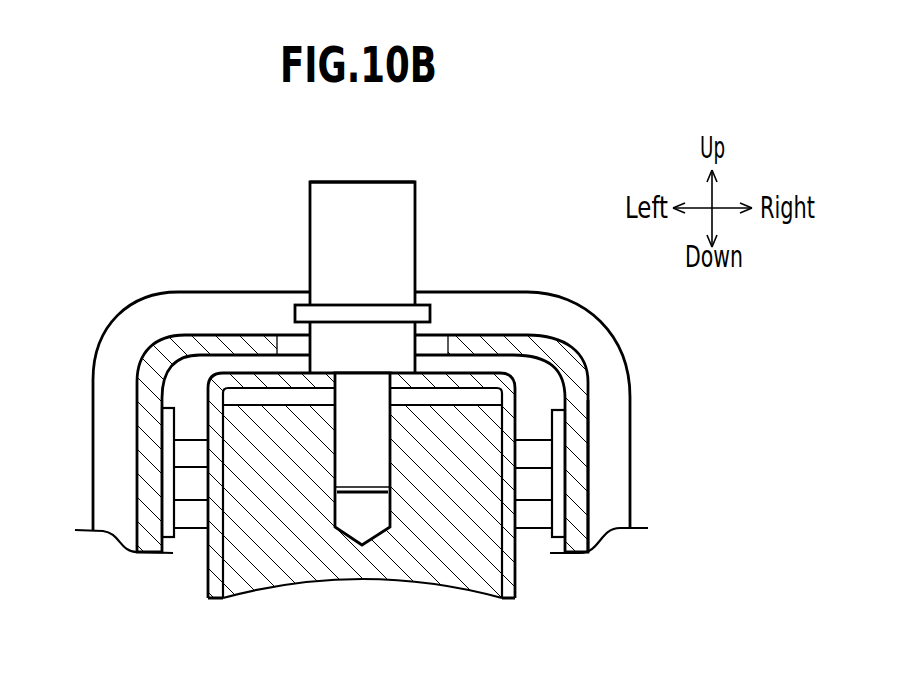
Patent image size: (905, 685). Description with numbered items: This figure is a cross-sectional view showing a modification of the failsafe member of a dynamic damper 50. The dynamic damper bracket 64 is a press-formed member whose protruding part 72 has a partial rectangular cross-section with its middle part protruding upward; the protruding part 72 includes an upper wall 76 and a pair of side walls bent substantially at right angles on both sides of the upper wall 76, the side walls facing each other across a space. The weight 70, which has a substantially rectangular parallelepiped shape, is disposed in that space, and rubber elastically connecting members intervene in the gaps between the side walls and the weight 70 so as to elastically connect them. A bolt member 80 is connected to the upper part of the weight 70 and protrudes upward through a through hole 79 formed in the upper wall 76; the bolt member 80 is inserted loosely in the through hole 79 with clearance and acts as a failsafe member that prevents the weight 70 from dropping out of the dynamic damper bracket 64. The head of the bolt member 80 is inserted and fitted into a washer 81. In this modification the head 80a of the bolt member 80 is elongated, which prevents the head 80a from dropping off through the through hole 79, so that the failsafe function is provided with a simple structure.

The dynamic damper 50 is at (185, 313).
The dynamic damper bracket 64 is at (601, 430).
The weight 70 is at (357, 578).
The protruding part 72 is at (462, 333).
The upper wall 76 is at (266, 333).
The through hole 79 is at (448, 347).
The bolt member 80 is at (331, 339).
The head 80a is at (362, 188).
The washer 81 is at (368, 312).